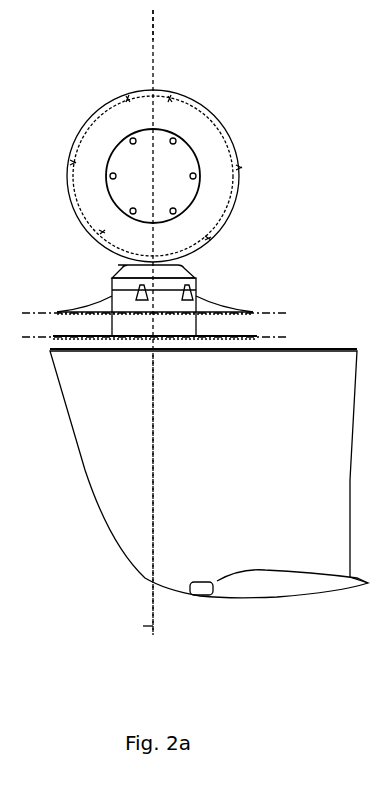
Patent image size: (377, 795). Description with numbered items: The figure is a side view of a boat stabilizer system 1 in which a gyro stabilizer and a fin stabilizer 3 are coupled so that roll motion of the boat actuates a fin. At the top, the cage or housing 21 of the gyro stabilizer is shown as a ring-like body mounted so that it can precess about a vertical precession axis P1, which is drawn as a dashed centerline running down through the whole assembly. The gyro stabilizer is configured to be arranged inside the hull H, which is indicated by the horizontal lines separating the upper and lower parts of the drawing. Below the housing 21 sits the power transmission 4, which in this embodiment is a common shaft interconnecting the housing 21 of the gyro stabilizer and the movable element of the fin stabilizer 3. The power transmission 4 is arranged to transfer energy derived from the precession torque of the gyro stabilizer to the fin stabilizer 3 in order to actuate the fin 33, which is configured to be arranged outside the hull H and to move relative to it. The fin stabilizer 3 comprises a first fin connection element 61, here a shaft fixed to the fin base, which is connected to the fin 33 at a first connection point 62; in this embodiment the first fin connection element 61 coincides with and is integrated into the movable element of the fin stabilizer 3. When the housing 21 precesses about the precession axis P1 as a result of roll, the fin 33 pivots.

The boat stabilizer system 1 is at (70, 32).
The precession axis P1 is at (178, 30).
The housing 21 is at (203, 103).
The power transmission 4 is at (172, 262).
The first fin connection element 61 is at (140, 350).
The first connection point 62 is at (160, 350).
The hull H is at (154, 325).
The fin stabilizer 3 is at (195, 490).
The fin 33 is at (214, 451).